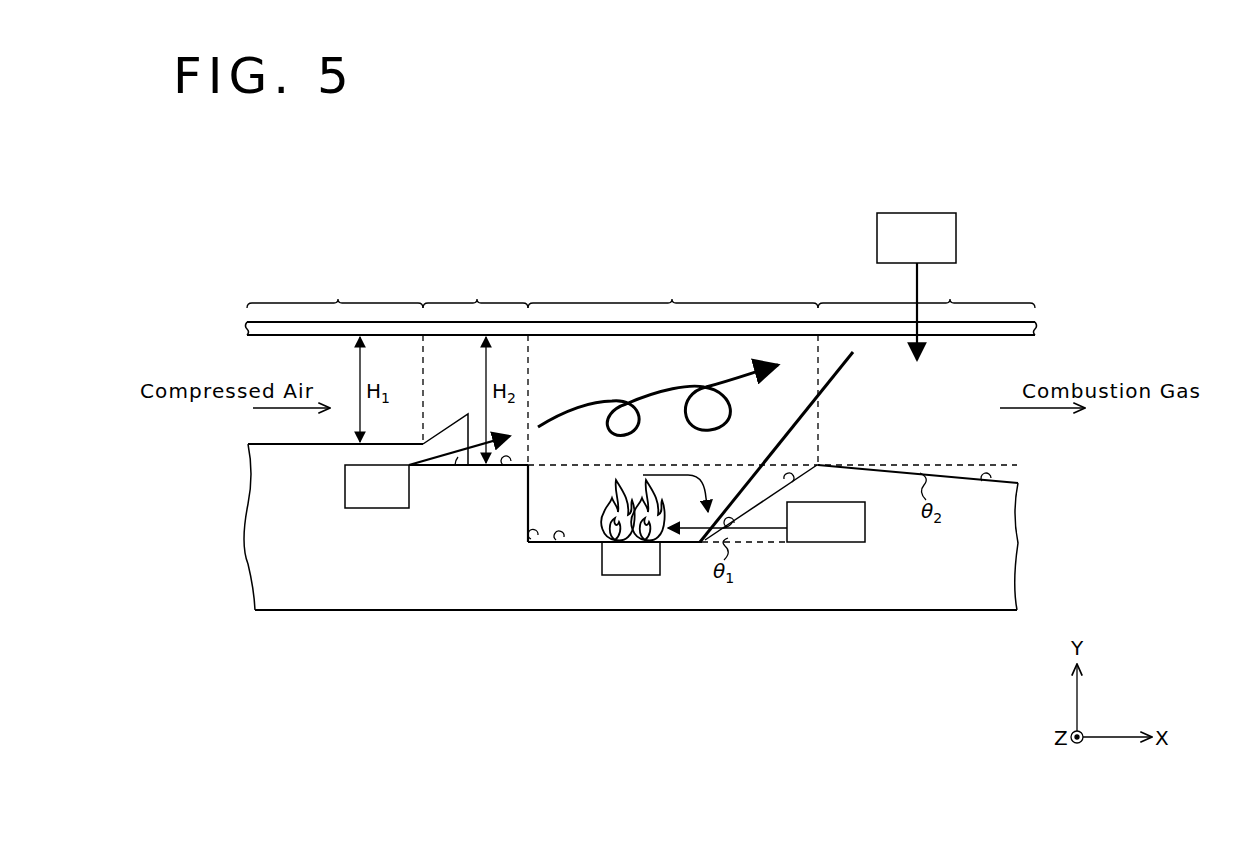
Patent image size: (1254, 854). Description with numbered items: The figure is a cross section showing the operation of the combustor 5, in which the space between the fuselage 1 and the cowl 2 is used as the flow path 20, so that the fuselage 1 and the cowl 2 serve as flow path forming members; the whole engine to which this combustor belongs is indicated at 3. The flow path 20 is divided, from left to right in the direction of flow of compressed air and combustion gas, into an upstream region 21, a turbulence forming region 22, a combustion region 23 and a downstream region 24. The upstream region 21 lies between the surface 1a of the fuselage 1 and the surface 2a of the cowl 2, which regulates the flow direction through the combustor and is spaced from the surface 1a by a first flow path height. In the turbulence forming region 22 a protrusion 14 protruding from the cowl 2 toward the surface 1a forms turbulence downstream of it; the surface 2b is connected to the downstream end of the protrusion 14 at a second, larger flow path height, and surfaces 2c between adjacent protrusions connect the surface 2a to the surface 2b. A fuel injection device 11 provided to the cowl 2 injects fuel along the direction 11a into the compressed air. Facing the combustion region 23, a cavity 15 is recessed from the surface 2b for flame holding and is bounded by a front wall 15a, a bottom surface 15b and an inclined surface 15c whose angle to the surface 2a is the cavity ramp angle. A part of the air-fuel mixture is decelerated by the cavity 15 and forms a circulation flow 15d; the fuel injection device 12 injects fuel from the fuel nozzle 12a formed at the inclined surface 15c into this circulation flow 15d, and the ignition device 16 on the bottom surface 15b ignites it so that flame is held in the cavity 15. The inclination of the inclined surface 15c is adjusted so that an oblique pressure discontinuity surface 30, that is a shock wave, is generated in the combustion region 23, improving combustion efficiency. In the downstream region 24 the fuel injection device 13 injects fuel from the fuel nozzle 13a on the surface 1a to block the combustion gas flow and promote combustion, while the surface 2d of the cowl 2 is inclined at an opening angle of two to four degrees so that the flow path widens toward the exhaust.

The fuselage 1 is at (246, 323).
The surface of the fuselage 1a is at (273, 337).
The cowl 2 is at (253, 567).
The surface of the cowl 2a is at (272, 443).
The surface of the cowl 2b is at (508, 468).
The surface of the cowl 2c is at (462, 468).
The surface of the cowl 2d is at (988, 480).
The combustor 3 is at (907, 113).
The combustor 5 is at (505, 213).
The fuel injection device 11 is at (365, 508).
The first fuel injection direction 11a is at (470, 467).
The fuel injection device 12 is at (860, 538).
The fuel nozzle 12a is at (734, 526).
The fuel injection device 13 is at (917, 213).
The fuel nozzle 13a is at (911, 341).
The protrusion 14 is at (445, 437).
The cavity 15 is at (574, 515).
The front wall 15a is at (530, 544).
The bottom surface 15b is at (560, 543).
The inclined surface 15c is at (792, 481).
The circulation flow 15d is at (697, 475).
The ignition device 16 is at (660, 572).
The flow path 20 is at (576, 375).
The upstream region 21 is at (335, 291).
The turbulence forming region 22 is at (475, 291).
The combustion region 23 is at (673, 291).
The downstream region 24 is at (926, 291).
The pressure discontinuity surface 30 is at (837, 377).